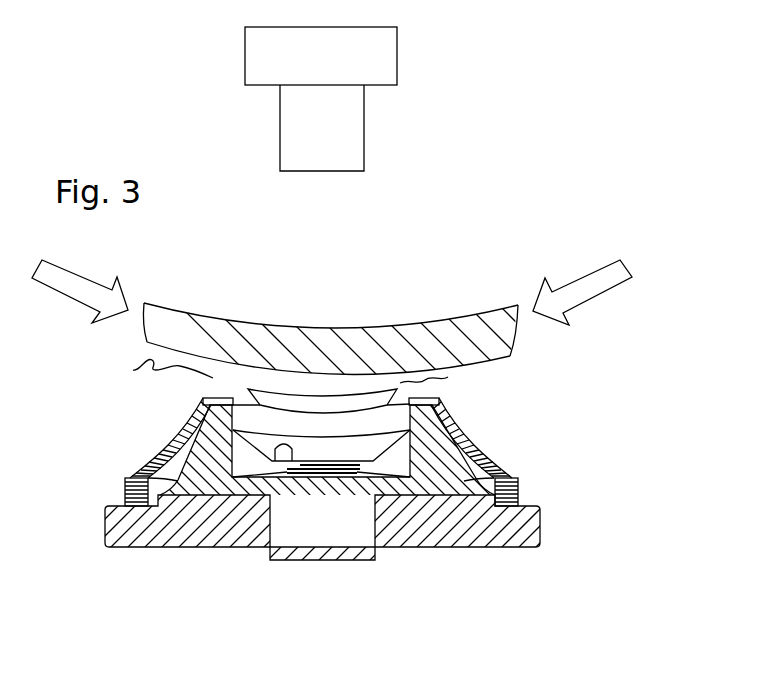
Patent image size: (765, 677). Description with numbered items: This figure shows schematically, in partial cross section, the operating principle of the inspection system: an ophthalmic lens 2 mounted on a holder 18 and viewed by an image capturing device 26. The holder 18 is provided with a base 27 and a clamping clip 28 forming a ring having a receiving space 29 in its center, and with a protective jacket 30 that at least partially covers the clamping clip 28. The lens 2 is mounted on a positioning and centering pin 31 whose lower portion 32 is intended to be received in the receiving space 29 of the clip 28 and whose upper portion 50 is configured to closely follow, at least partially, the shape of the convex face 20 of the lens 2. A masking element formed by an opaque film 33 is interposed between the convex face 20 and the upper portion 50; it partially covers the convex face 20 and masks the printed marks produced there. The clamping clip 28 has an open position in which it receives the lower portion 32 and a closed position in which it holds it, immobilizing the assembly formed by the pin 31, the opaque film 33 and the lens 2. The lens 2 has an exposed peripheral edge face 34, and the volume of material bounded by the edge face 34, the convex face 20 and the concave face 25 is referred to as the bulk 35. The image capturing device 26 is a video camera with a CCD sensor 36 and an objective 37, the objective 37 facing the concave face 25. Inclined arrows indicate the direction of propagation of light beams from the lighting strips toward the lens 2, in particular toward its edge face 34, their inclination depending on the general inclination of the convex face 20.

The ophthalmic lens 2 is at (368, 315).
The holder 18 is at (328, 497).
The convex face 20 is at (511, 349).
The concave face 25 is at (368, 326).
The image capturing device 26 is at (367, 88).
The base 27 is at (105, 520).
The clamping clip 28 is at (215, 482).
The receiving space 29 is at (410, 467).
The protective jacket 30 is at (126, 487).
The positioning and centering pin 31 is at (235, 377).
The lower portion 32 is at (456, 424).
The opaque film 33 is at (133, 370).
The edge face 34 is at (519, 307).
The bulk 35 is at (312, 333).
The CCD sensor 36 is at (382, 67).
The objective 37 is at (352, 133).
The upper portion 50 is at (430, 398).